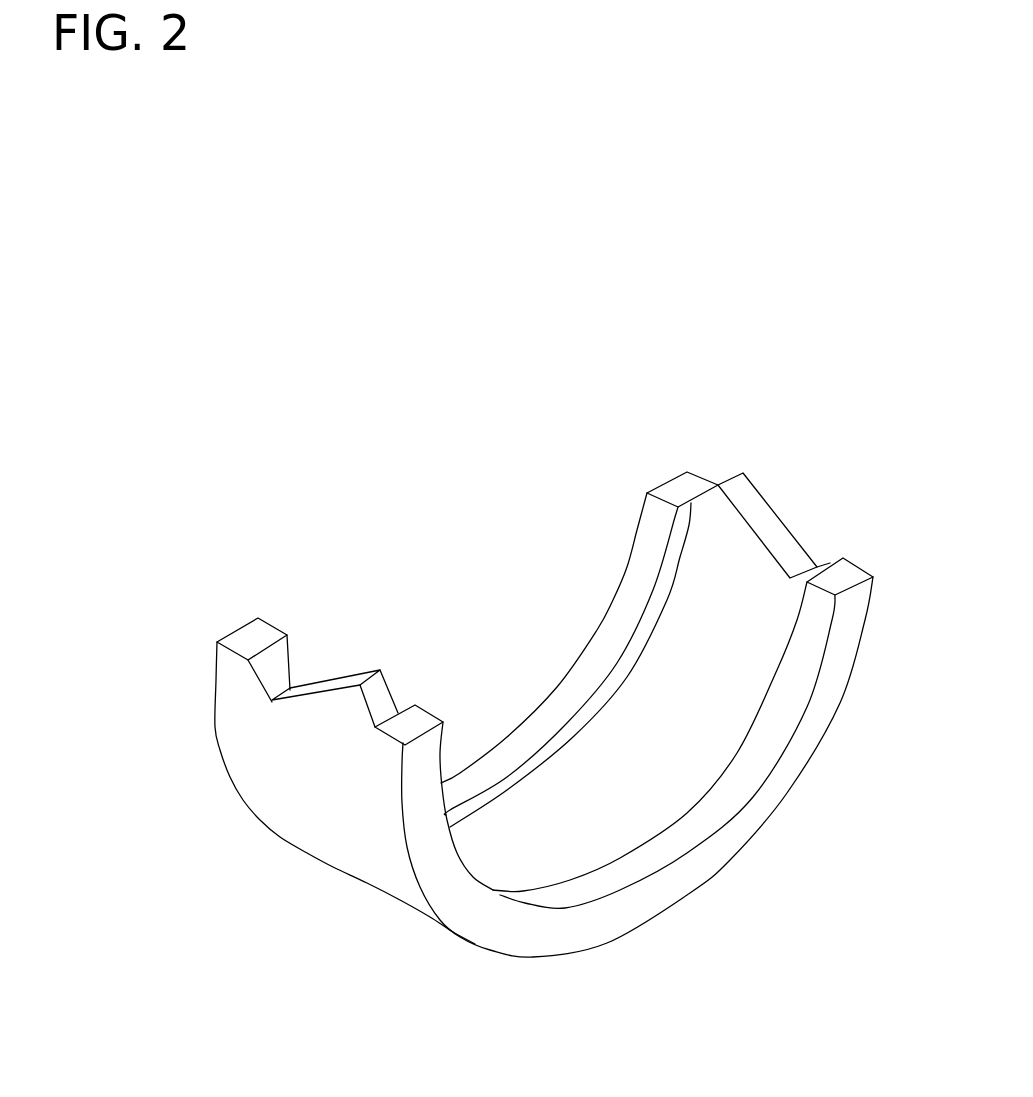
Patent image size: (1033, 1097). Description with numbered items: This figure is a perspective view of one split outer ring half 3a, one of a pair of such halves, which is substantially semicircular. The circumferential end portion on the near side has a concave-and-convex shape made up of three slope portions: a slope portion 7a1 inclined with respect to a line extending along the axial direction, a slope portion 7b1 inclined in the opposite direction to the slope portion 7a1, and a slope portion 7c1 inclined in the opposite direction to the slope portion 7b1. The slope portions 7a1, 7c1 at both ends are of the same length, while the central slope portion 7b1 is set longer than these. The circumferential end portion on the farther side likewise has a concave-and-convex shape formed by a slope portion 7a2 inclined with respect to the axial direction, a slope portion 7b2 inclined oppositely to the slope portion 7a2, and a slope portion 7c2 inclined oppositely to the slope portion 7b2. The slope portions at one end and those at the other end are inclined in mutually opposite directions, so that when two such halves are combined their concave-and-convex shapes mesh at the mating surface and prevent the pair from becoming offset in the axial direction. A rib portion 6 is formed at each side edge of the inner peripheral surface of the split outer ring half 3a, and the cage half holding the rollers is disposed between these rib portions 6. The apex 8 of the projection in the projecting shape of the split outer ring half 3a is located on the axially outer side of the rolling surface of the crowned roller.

The split outer ring half 3a is at (447, 445).
The rib portion 6 is at (633, 582).
The slope portion 7a1 is at (267, 672).
The slope portion 7b1 is at (320, 680).
The slope portion 7c1 is at (382, 698).
The slope portion 7a2 is at (718, 487).
The slope portion 7b2 is at (770, 525).
The slope portion 7c2 is at (822, 563).
The apex 8 is at (378, 672).